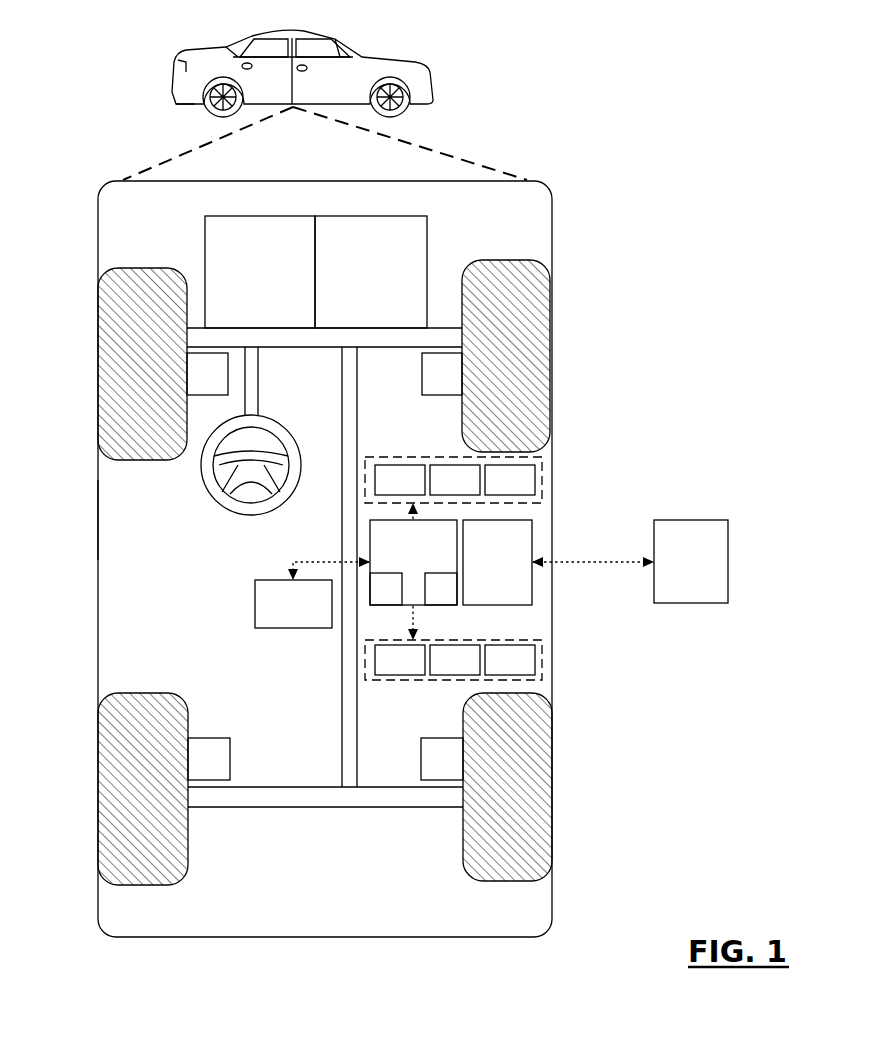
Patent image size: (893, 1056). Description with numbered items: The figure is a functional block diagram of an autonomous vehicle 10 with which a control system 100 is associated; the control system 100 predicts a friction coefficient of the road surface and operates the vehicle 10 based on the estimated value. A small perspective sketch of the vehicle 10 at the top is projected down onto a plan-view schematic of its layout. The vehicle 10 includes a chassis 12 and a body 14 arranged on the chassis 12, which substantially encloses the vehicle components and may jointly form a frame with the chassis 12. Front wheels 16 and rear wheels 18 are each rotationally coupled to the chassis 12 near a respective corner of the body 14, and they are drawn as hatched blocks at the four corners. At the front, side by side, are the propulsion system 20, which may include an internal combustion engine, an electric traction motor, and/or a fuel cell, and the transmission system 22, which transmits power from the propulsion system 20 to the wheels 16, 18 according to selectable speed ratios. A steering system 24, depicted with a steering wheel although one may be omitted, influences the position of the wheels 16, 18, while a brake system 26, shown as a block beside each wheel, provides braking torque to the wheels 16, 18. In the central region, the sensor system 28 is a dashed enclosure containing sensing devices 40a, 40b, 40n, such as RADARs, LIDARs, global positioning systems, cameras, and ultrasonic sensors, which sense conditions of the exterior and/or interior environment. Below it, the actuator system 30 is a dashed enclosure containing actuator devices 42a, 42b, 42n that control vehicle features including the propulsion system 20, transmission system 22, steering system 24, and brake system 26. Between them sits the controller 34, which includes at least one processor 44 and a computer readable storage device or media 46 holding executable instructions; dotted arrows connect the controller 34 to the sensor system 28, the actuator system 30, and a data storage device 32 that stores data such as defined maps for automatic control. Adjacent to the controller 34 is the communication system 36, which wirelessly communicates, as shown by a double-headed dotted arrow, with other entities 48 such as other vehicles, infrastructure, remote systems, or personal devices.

The vehicle 10 is at (178, 84).
The control system 100 is at (580, 192).
The chassis 12 is at (340, 722).
The body 14 is at (97, 545).
The front wheels 16 is at (142, 268).
The rear wheels 18 is at (160, 885).
The propulsion system 20 is at (249, 283).
The transmission system 22 is at (360, 283).
The steering system 24 is at (286, 372).
The brake system 26 is at (197, 385).
The sensor system 28 is at (453, 458).
The actuator system 30 is at (453, 683).
The data storage device 32 is at (282, 615).
The controller 34 is at (402, 573).
The communication system 36 is at (486, 573).
The sensing device 40a is at (386, 490).
The sensing device 40b is at (441, 490).
The sensing device 40n is at (496, 490).
The actuator device 42a is at (386, 670).
The actuator device 42b is at (441, 670).
The actuator device 42n is at (496, 670).
The processor 44 is at (376, 600).
The computer readable storage device or media 46 is at (431, 600).
The other entities 48 is at (680, 572).